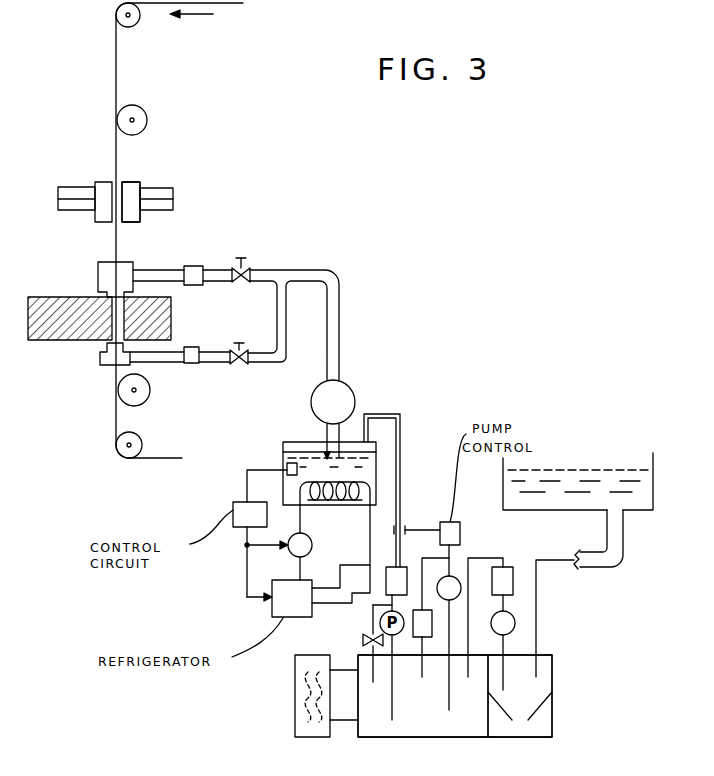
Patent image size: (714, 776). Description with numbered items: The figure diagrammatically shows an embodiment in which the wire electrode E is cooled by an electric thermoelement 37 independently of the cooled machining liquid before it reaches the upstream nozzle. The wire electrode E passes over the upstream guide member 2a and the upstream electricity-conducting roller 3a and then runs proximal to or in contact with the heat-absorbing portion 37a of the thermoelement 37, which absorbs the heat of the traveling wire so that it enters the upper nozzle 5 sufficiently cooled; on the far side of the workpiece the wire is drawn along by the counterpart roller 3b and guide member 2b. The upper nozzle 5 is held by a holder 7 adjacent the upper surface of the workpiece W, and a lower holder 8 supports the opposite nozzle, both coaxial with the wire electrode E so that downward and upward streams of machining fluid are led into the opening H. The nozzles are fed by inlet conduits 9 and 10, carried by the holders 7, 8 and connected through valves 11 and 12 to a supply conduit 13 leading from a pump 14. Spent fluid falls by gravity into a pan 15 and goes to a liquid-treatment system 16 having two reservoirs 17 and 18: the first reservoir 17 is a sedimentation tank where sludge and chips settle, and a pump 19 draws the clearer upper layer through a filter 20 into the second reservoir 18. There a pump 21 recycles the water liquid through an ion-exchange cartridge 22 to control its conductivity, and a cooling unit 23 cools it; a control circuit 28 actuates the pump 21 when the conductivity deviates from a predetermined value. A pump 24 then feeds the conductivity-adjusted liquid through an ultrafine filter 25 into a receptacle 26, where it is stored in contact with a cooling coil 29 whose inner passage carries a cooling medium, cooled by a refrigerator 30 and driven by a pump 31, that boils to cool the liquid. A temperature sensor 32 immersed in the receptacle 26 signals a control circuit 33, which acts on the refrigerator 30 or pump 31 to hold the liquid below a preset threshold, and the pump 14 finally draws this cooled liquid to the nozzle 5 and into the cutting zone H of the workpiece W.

The upstream guide member 2a is at (116, 19).
The take-up roller 2b is at (127, 458).
The upstream electricity-conducting roller 3a is at (143, 125).
The guide roller 3b is at (145, 401).
The upper nozzle 5 is at (98, 271).
The holder 7 is at (193, 266).
The holder 8 is at (190, 364).
The inlet conduit 9 is at (223, 281).
The inlet conduit 10 is at (220, 362).
The valve 11 is at (252, 258).
The valve 12 is at (247, 350).
The supply conduit 13 is at (341, 282).
The pump 14 is at (312, 392).
The pan 15 is at (653, 472).
The liquid-treatment system 16 is at (520, 774).
The first reservoir 17 is at (552, 675).
The second reservoir 18 is at (426, 737).
The pump 19 is at (515, 622).
The filter 20 is at (513, 567).
The pump 21 is at (449, 605).
The ion-exchange cartridge 22 is at (427, 637).
The temperature-control or cooling unit 23 is at (313, 737).
The pump 24 is at (365, 610).
The ultrafine filter 25 is at (386, 566).
The receptacle 26 is at (300, 442).
The control circuit 28 is at (460, 527).
The cooling coil 29 is at (373, 488).
The refrigerator 30 is at (272, 606).
The pump 31 is at (312, 545).
The temperature sensor 32 is at (287, 468).
The control circuit 33 is at (233, 502).
The thermoelement 37 is at (173, 200).
The heat-absorbing portion 37a is at (127, 222).
The wire electrode E is at (229, 2).
The workpiece W is at (171, 314).
The opening H is at (112, 325).